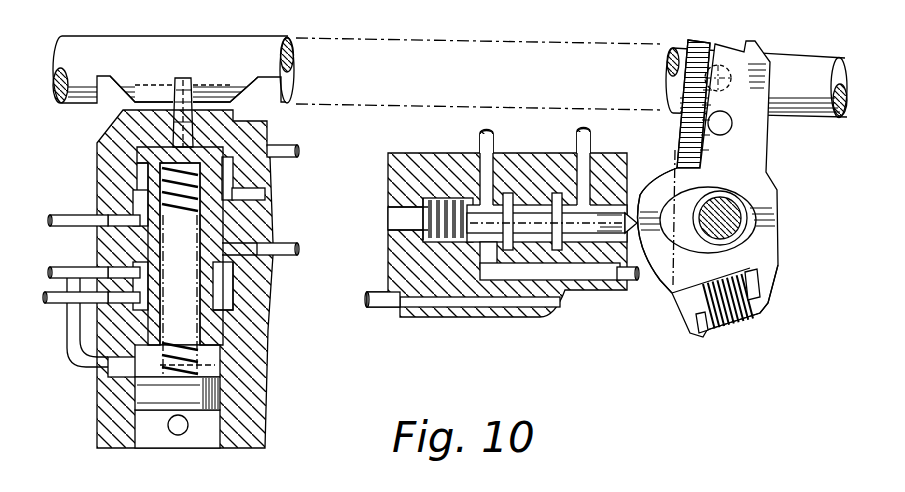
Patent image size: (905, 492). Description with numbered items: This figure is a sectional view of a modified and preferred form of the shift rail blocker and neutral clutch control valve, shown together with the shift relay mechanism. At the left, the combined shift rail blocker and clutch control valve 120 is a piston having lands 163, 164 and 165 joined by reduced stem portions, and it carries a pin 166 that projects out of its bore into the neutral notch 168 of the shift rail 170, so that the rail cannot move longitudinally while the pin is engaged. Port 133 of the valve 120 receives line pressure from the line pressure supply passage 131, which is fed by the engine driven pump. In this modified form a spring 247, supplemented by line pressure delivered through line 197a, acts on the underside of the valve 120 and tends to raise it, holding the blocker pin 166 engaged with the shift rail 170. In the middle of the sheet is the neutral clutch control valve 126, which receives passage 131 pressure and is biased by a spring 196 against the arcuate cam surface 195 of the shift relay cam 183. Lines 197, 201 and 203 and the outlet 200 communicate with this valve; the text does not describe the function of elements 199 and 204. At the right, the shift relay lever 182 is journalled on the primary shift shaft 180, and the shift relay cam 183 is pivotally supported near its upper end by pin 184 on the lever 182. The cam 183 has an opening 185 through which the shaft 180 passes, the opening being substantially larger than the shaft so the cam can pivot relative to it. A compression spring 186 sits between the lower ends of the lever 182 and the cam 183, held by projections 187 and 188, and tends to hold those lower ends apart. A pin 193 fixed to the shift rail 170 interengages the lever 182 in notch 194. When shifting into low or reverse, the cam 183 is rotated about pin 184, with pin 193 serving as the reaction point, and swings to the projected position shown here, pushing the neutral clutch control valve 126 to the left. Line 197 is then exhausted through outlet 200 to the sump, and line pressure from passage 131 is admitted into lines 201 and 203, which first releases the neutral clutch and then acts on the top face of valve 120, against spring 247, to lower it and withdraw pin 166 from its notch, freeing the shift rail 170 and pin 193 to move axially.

The shift rail 170 is at (272, 47).
The pin 166 is at (185, 96).
The neutral notch 168 is at (178, 78).
The land 165 is at (140, 147).
The combined shift rail blocker and clutch control valve 120 is at (210, 343).
The spring 247 is at (195, 364).
The line 201 is at (283, 147).
The port 133 is at (282, 245).
The line 203 is at (80, 218).
The line 197 is at (60, 270).
The line 197a is at (80, 366).
The pipe 199 is at (55, 304).
The land 164 is at (222, 258).
The land 163 is at (210, 320).
The line pressure supply passage 131 is at (587, 270).
The outlet 200 is at (617, 244).
The port 204 is at (392, 216).
The spring 196 is at (428, 238).
The neutral clutch control valve 126 is at (525, 212).
The notch 194 is at (703, 43).
The shift relay lever 182 is at (757, 163).
The arcuate cam surface 195 is at (643, 182).
The opening 185 is at (661, 279).
The primary shift shaft 180 is at (740, 212).
The pin 184 is at (733, 123).
The pin 193 is at (724, 64).
The shift relay cam 183 is at (775, 260).
The compression spring 186 is at (740, 311).
The projection 187 is at (752, 298).
The projection 188 is at (700, 318).